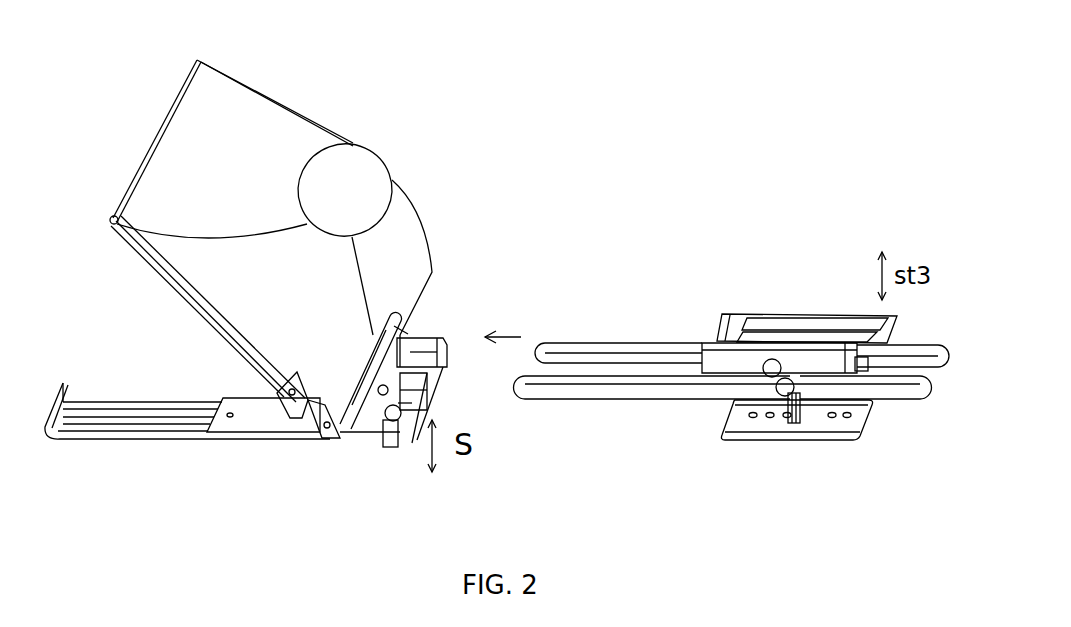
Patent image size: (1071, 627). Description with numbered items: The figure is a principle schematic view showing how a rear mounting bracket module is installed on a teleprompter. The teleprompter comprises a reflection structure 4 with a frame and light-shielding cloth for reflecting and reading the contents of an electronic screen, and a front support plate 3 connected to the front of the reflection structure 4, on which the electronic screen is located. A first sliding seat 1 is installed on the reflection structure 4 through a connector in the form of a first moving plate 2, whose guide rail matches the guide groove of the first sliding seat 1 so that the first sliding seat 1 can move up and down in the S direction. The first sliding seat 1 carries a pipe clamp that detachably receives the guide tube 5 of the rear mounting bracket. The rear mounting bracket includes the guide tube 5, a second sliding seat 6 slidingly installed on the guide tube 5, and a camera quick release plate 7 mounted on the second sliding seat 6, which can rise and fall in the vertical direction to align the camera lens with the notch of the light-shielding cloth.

The first sliding seat 1 is at (432, 340).
The first moving plate 2 is at (400, 450).
The front support plate 3 is at (246, 440).
The reflection structure 4 is at (280, 114).
The guide tube 5 is at (590, 396).
The second sliding seat 6 is at (813, 417).
The camera quick release plate 7 is at (780, 314).